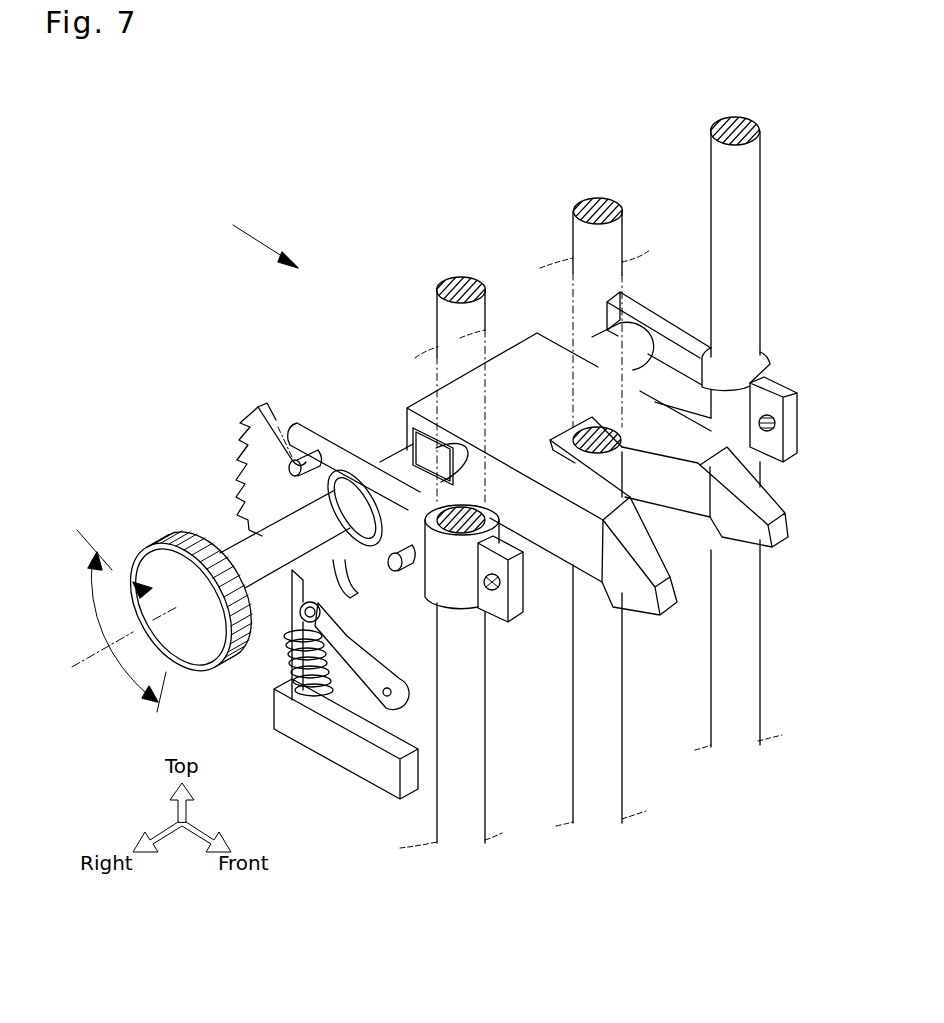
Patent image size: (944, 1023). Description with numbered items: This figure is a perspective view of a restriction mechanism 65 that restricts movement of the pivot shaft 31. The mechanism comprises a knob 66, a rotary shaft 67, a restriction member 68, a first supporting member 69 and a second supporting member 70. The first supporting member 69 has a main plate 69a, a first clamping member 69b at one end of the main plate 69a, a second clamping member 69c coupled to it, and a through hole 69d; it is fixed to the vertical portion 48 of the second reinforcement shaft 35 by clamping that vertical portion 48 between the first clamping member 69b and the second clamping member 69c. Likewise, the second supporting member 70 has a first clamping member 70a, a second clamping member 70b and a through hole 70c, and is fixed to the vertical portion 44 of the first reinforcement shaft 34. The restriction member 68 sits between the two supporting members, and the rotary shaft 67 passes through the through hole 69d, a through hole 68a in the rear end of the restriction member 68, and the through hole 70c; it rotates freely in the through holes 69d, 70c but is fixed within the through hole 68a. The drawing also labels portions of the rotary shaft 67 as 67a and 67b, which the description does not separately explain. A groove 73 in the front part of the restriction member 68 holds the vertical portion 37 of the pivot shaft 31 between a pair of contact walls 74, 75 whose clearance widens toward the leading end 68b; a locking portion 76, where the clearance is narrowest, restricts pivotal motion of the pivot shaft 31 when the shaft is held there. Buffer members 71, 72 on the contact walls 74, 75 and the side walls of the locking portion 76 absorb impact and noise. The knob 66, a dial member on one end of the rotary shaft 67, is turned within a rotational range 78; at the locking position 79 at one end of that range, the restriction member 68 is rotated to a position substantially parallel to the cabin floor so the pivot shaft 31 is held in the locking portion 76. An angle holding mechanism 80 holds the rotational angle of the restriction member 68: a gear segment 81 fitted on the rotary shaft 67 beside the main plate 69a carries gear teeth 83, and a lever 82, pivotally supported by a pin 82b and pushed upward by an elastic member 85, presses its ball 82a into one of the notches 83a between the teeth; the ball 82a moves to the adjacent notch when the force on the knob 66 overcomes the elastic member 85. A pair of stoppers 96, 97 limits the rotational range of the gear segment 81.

The pivot shaft 31 is at (568, 193).
The first reinforcement shaft 34 is at (704, 114).
The second reinforcement shaft 35 is at (430, 278).
The vertical portion 37 is at (583, 250).
The vertical portion 44 is at (735, 176).
The vertical portion 48 is at (472, 710).
The restriction mechanism 65 is at (248, 236).
The knob 66 is at (150, 520).
The rotary shaft 67 is at (316, 516).
The shaft collar 67a is at (242, 553).
The shaft end 67b is at (632, 358).
The restriction member 68 is at (528, 322).
The through hole 68a is at (413, 428).
The leading end 68b is at (783, 540).
The first supporting member 69 is at (300, 412).
The main plate 69a is at (356, 452).
The first clamping member 69b is at (493, 600).
The second clamping member 69c is at (530, 590).
The through hole 69d is at (396, 553).
The second supporting member 70 is at (676, 292).
The first clamping member 70a is at (608, 316).
The second clamping member 70b is at (790, 362).
The through hole 70c is at (640, 300).
The buffer member 71 is at (746, 540).
The buffer member 72 is at (680, 610).
The groove 73 is at (648, 452).
The contact wall 74 is at (710, 493).
The contact wall 75 is at (653, 530).
The locking portion 76 is at (560, 430).
The rotational range 78 is at (107, 623).
The locking position 79 is at (90, 536).
The angle holding mechanism 80 is at (233, 398).
The gear segment 81 is at (258, 395).
The lever 82 is at (368, 682).
The ball 82a is at (293, 617).
The pin 82b is at (384, 700).
The gear teeth 83 is at (238, 455).
The notches 83a is at (244, 478).
The elastic member 85 is at (333, 687).
The stopper 96 is at (304, 458).
The stopper 97 is at (388, 588).